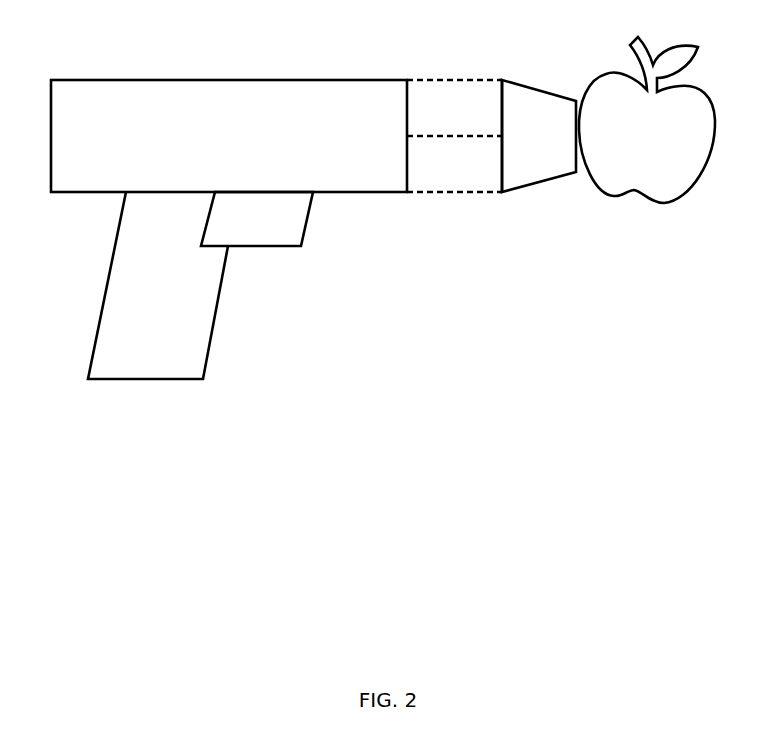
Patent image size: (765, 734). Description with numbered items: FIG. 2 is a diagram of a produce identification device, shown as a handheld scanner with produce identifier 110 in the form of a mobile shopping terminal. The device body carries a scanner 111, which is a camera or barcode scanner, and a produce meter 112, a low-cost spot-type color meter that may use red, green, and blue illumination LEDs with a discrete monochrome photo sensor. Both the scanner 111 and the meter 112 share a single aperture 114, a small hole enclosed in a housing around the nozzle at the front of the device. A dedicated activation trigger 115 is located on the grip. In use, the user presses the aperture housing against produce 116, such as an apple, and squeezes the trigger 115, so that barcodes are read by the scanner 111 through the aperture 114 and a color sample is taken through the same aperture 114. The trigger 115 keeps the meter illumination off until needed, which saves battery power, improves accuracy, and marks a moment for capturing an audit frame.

The handheld scanner with produce identifier 110 is at (51, 181).
The scanner 111 is at (477, 183).
The produce meter 112 is at (433, 87).
The aperture 114 is at (538, 162).
The dedicated activation trigger 115 is at (303, 232).
The produce 116 is at (698, 177).